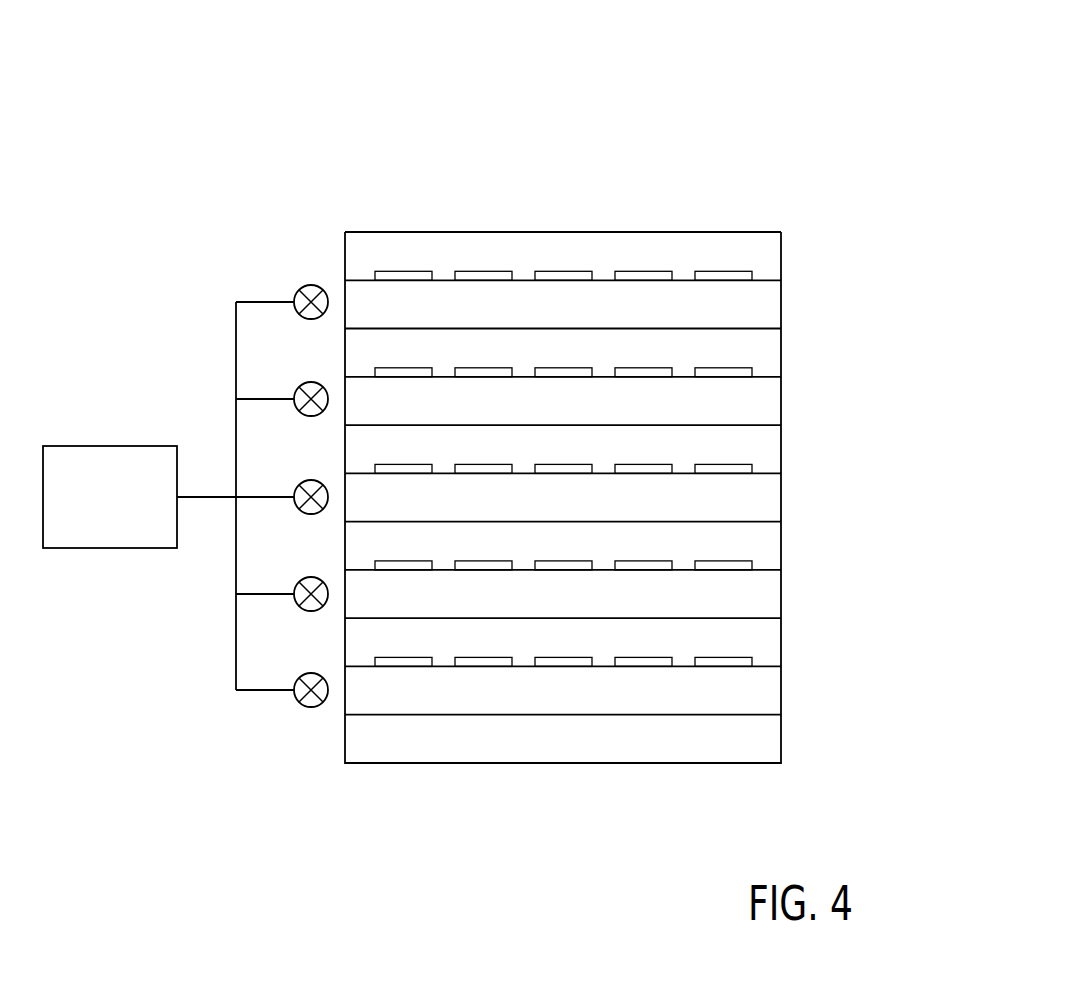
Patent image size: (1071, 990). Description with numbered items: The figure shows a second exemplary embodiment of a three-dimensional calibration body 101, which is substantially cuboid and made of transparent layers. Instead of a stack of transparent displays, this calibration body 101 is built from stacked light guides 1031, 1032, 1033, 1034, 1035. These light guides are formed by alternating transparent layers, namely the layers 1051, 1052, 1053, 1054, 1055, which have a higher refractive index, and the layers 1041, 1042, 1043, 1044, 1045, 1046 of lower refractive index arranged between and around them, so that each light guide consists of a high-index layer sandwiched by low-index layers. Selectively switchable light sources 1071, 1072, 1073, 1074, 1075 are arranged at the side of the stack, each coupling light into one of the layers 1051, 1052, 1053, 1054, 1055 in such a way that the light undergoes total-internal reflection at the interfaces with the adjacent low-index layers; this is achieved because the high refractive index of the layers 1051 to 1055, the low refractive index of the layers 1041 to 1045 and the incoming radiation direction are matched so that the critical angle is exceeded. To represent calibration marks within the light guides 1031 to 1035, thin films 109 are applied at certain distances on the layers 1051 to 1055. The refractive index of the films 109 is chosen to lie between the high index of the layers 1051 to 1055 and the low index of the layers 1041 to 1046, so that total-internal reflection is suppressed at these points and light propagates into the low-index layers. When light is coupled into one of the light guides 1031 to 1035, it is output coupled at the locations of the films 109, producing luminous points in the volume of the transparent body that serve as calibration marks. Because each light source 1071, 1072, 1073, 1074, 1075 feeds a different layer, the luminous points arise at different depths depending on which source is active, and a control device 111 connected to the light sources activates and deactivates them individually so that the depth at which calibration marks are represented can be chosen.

The 3D calibration body 101 is at (615, 124).
The first light guide 1031 is at (635, 284).
The second light guide 1032 is at (635, 381).
The third light guide 1033 is at (635, 477).
The fourth light guide 1034 is at (635, 574).
The fifth light guide 1035 is at (635, 670).
The first low-refractive-index layer 1041 is at (768, 256).
The second low-refractive-index layer 1042 is at (768, 352).
The third low-refractive-index layer 1043 is at (768, 449).
The fourth low-refractive-index layer 1044 is at (768, 546).
The fifth low-refractive-index layer 1045 is at (768, 642).
The sixth low-refractive-index layer 1046 is at (768, 738).
The first high-refractive-index layer 1051 is at (768, 314).
The second high-refractive-index layer 1052 is at (768, 410).
The third high-refractive-index layer 1053 is at (768, 507).
The fourth high-refractive-index layer 1054 is at (768, 604).
The fifth high-refractive-index layer 1055 is at (768, 700).
The first light source 1071 is at (310, 283).
The second light source 1072 is at (303, 384).
The third light source 1073 is at (306, 479).
The fourth light source 1074 is at (305, 575).
The fifth light source 1075 is at (308, 708).
The thin films 109 is at (484, 367).
The control device 111 is at (112, 442).